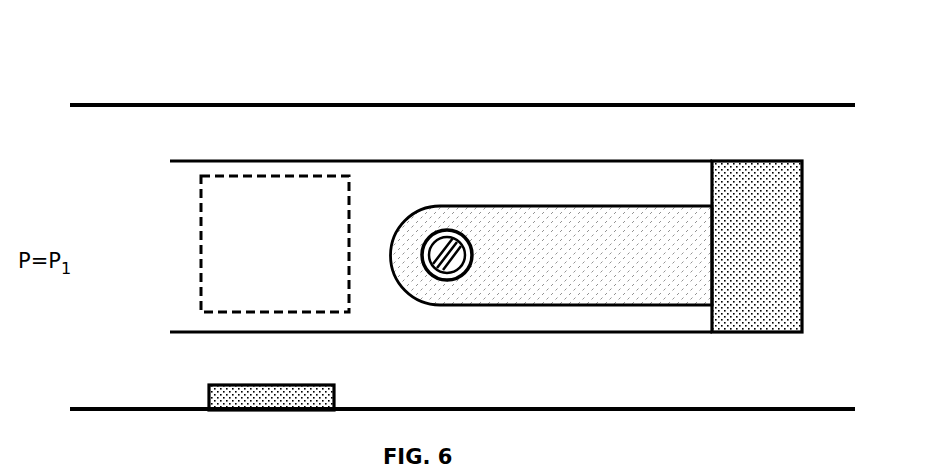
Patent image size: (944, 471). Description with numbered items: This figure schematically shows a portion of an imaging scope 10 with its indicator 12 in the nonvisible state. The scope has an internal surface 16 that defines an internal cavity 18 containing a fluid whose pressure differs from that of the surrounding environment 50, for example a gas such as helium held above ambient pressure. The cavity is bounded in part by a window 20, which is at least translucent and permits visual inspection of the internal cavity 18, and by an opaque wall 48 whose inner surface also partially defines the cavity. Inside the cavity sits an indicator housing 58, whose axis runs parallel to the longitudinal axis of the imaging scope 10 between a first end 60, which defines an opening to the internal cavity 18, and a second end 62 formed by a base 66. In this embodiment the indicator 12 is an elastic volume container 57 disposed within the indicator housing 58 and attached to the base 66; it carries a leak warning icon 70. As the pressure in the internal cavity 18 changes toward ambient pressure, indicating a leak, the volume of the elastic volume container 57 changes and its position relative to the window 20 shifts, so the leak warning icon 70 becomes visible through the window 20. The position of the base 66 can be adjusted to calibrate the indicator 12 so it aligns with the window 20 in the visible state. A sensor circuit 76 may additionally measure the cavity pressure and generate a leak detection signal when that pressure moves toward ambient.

The imaging scope 10 is at (476, 234).
The indicator 12 is at (441, 200).
The internal surface 16 is at (755, 407).
The internal cavity 18 is at (441, 225).
The window 20 is at (270, 175).
The wall 48 is at (754, 103).
The surrounding environment 50 is at (665, 75).
The elastic volume container 57 is at (551, 212).
The indicator housing 58 is at (590, 159).
The first end 60 is at (148, 187).
The second end 62 is at (820, 186).
The base 66 is at (770, 168).
The leak warning icon 70 is at (450, 280).
The sensor circuit 76 is at (303, 405).